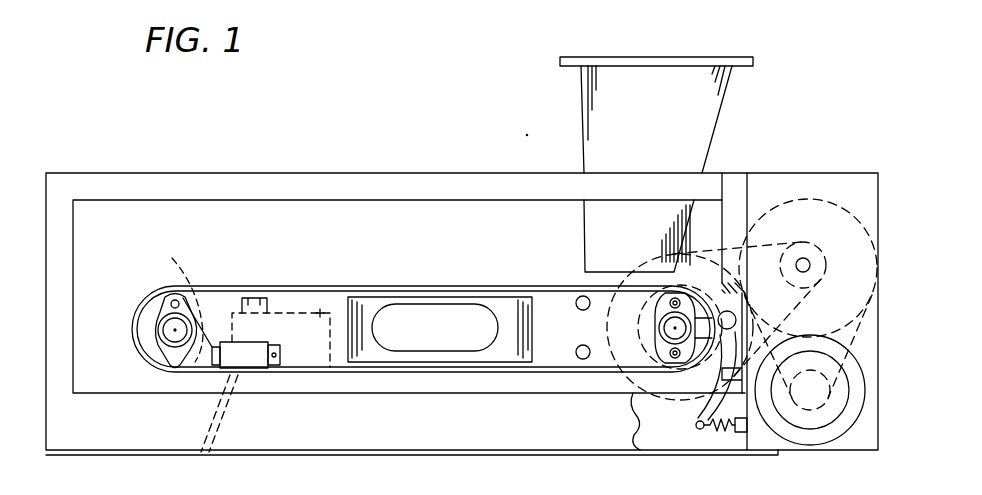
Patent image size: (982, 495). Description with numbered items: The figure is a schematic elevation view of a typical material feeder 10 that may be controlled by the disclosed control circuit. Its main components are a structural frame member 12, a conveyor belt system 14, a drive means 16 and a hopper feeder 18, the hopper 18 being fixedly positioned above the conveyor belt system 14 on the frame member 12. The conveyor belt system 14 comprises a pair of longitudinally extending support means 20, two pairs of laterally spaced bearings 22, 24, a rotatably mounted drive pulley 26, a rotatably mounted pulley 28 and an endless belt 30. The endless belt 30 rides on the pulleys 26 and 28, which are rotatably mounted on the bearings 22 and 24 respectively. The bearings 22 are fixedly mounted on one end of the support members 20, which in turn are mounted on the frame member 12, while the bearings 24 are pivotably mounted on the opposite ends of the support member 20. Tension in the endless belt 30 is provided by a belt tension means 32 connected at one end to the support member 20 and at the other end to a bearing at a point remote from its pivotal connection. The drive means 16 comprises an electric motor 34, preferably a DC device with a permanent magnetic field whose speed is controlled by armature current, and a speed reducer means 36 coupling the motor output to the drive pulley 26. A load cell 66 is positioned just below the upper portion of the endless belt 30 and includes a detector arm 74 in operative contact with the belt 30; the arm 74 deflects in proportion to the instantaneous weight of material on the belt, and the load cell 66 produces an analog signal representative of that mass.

The material feeder 10 is at (528, 124).
The structural frame member 12 is at (226, 163).
The conveyor belt system 14 is at (244, 258).
The drive means 16 is at (831, 462).
The hopper feeder 18 is at (710, 150).
The longitudinally extending support means 20 is at (515, 263).
The laterally spaced bearings 22 is at (660, 352).
The laterally spaced bearings 24 is at (163, 347).
The drive pulley 26 is at (640, 320).
The pulley 28 is at (170, 304).
The endless belt 30 is at (398, 288).
The belt tension means 32 is at (250, 365).
The electric motor 34 is at (838, 442).
The speed reducer means 36 is at (851, 184).
The load cell 66 is at (322, 292).
The detector arm 74 is at (262, 298).